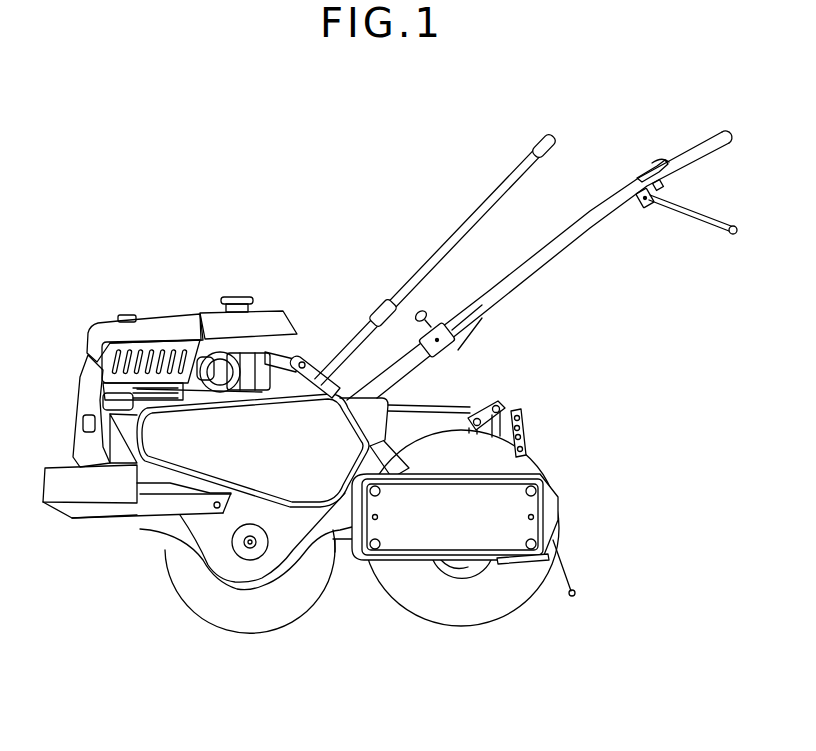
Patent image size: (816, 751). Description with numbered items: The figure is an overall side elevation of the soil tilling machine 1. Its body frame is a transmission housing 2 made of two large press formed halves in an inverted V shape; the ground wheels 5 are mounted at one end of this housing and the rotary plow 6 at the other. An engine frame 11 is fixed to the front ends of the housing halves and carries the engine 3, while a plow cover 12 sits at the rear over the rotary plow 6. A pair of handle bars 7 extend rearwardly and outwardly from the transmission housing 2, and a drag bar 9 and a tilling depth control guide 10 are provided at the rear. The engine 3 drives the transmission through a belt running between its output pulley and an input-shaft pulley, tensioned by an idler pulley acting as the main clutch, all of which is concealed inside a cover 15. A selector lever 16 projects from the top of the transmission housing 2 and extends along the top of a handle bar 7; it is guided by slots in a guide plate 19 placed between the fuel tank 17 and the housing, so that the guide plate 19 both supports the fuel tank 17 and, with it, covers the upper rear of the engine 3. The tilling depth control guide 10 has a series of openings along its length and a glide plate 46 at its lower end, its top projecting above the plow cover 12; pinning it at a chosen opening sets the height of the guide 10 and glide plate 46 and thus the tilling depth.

The soil tilling machine 1 is at (362, 180).
The transmission housing 2 is at (195, 524).
The engine 3 is at (149, 345).
The ground wheels 5 is at (257, 618).
The rotary plow 6 is at (448, 615).
The handle bars 7 is at (583, 216).
The drag bar 9 is at (500, 422).
The tilling depth control guide 10 is at (523, 428).
The engine frame 11 is at (153, 508).
The plow cover 12 is at (492, 463).
The cover 15 is at (262, 418).
The selector lever 16 is at (486, 200).
The fuel tank 17 is at (277, 326).
The guide plate 19 is at (313, 378).
The glide plate 46 is at (538, 568).